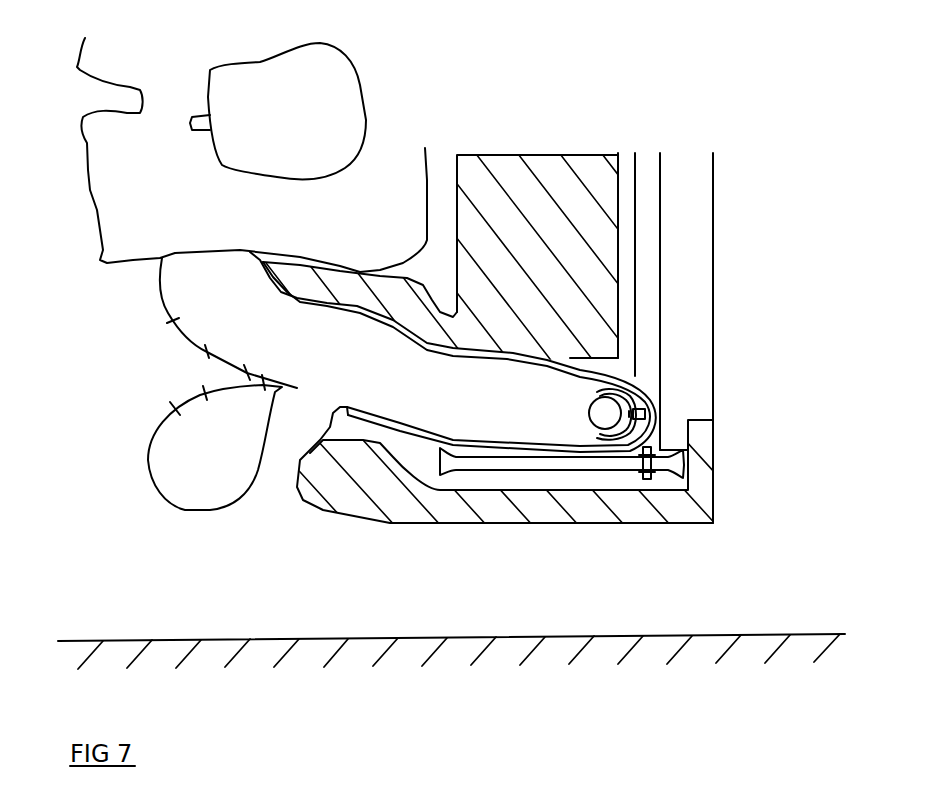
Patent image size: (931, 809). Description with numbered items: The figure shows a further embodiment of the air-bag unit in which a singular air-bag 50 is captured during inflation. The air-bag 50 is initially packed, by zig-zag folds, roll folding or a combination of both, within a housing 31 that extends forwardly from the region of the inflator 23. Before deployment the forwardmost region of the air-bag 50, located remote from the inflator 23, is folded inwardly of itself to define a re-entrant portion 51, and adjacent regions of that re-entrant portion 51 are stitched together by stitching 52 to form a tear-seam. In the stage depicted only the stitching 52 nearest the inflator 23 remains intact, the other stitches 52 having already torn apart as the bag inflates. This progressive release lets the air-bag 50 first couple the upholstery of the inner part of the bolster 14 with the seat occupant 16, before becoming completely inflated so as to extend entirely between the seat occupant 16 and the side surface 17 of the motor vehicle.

The bolster 14 is at (317, 270).
The seat occupant 16 is at (278, 111).
The side surface of the motor vehicle 17 is at (655, 635).
The inflator 23 is at (608, 413).
The housing 31 is at (360, 420).
The air-bag 50 is at (210, 510).
The re-entrant portion 51 is at (330, 420).
The stitching 52 is at (205, 355).